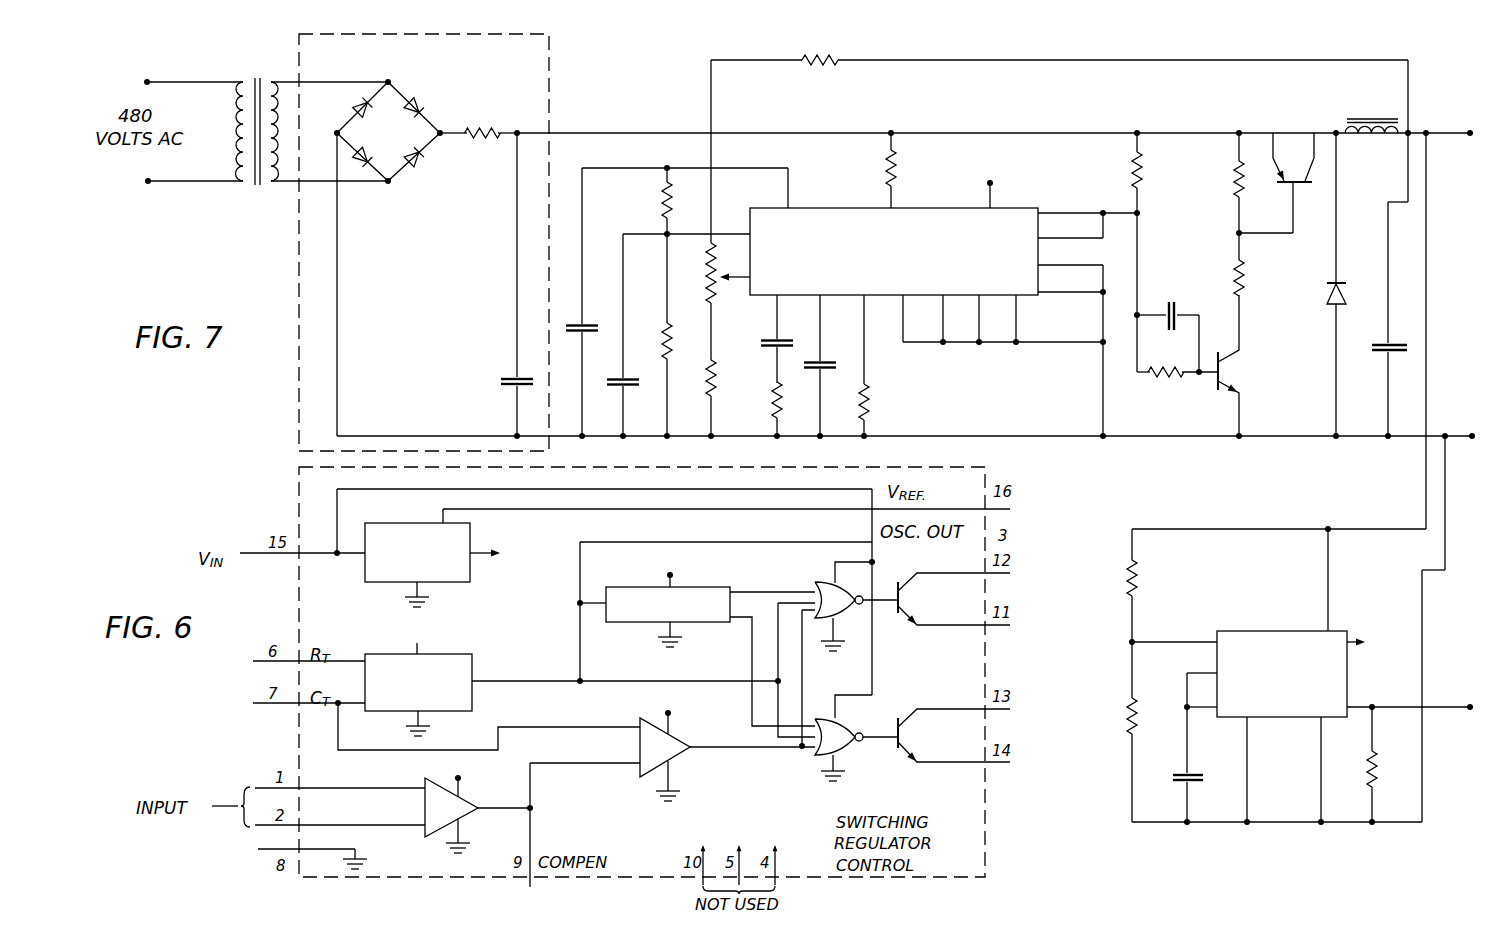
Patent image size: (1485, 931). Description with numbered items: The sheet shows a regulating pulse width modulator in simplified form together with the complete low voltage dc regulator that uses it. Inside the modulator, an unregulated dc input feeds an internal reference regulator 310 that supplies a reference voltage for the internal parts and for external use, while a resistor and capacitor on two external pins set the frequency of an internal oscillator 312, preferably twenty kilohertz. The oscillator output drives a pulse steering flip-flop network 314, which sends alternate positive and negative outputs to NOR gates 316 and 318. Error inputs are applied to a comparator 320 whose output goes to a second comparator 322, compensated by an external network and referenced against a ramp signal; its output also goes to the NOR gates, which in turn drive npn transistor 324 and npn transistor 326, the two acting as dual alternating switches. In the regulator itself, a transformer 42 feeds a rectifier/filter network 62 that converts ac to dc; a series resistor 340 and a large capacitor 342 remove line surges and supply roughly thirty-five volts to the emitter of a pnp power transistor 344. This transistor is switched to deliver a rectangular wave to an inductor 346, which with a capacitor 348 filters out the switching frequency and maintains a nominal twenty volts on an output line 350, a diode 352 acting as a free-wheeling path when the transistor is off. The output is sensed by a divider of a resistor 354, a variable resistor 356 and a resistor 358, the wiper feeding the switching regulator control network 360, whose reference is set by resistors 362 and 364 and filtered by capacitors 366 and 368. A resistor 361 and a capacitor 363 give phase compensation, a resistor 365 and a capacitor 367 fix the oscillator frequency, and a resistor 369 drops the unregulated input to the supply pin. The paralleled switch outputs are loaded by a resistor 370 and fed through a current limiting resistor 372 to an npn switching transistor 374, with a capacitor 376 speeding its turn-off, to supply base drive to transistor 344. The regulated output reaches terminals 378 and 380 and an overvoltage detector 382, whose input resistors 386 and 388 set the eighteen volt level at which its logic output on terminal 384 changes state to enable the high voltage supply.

In FIG. 7, the transformer 42 is at (255, 193).
In FIG. 7, the rectifier/filter network 62 is at (418, 76).
In FIG. 7, the series resistor 340 is at (478, 142).
In FIG. 7, the large capacitor 342 is at (502, 379).
In FIG. 7, the pnp power transistor 344 is at (1294, 152).
In FIG. 7, the inductor 346 is at (1372, 138).
In FIG. 7, the capacitor 348 is at (1378, 356).
In FIG. 7, the line 350 is at (1442, 130).
In FIG. 7, the diode 352 is at (1326, 292).
In FIG. 7, the resistor 354 is at (815, 57).
In FIG. 7, the variable resistor 356 is at (703, 289).
In FIG. 7, the resistor 358 is at (705, 383).
In FIG. 7, the switching regulator control network 360 is at (1028, 220).
In FIG. 7, the resistor 361 is at (771, 403).
In FIG. 7, the resistor 362 is at (660, 200).
In FIG. 7, the capacitor 363 is at (768, 344).
In FIG. 7, the resistor 364 is at (660, 332).
In FIG. 7, the resistor 365 is at (870, 400).
In FIG. 7, the capacitor 366 is at (590, 323).
In FIG. 7, the capacitor 367 is at (824, 361).
In FIG. 7, the capacitor 368 is at (612, 377).
In FIG. 7, the resistor 369 is at (895, 162).
In FIG. 7, the resistor 370 is at (1144, 166).
In FIG. 7, the current limiting resistor 372 is at (1170, 382).
In FIG. 7, the npn switching transistor 374 is at (1240, 378).
In FIG. 7, the capacitor 376 is at (1180, 302).
In FIG. 7, the terminal 378 is at (1235, 180).
In FIG. 7, the terminal 380 is at (1250, 280).
In FIG. 7, the overvoltage detector 382 is at (1256, 629).
In FIG. 7, the terminal 384 is at (1468, 712).
In FIG. 7, the input resistor 386 is at (1142, 574).
In FIG. 7, the input resistor 388 is at (1140, 708).
In FIG. 6, the internal reference regulator 310 is at (470, 583).
In FIG. 6, the internal oscillator 312 is at (476, 668).
In FIG. 6, the pulse steering flip-flop network 314 is at (722, 586).
In FIG. 6, the NOR gate 316 is at (822, 584).
In FIG. 6, the NOR gate 318 is at (848, 754).
In FIG. 6, the comparator 320 is at (438, 838).
In FIG. 6, the second comparator 322 is at (648, 764).
In FIG. 6, the npn transistor 324 is at (908, 620).
In FIG. 6, the npn transistor 326 is at (912, 710).